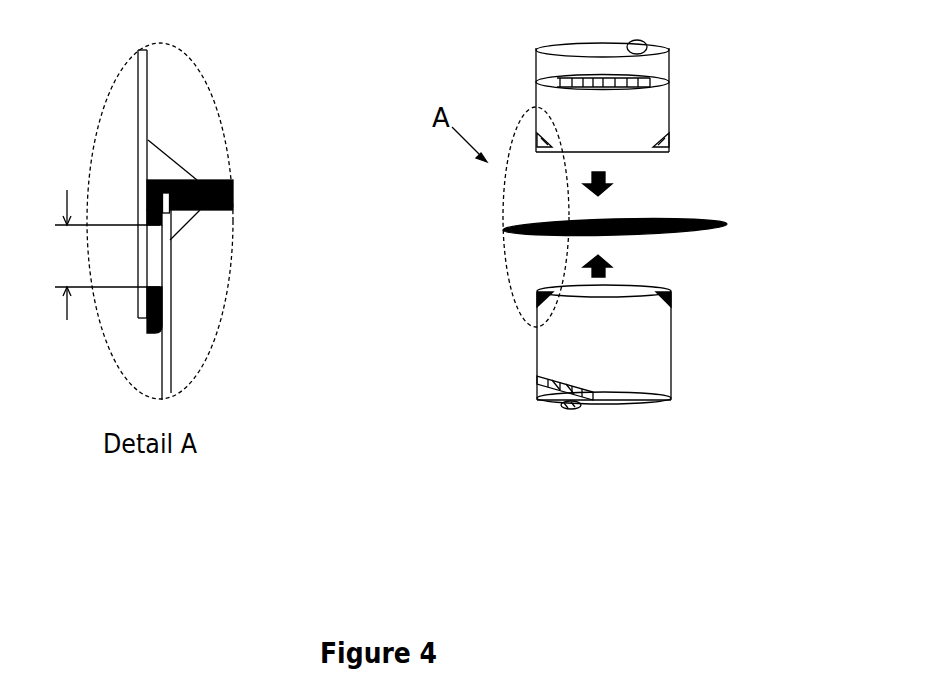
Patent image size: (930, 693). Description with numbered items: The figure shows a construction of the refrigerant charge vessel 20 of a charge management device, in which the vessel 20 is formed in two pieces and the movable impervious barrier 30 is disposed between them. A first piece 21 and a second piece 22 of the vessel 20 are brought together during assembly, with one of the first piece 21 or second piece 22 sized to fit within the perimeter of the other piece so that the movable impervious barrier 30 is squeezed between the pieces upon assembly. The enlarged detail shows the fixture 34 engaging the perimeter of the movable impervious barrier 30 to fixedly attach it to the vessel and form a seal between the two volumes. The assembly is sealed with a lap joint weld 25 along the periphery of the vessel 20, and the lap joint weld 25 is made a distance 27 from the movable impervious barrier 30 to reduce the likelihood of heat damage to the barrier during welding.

The refrigerant charge vessel 20 is at (671, 340).
The first piece 21 is at (170, 267).
The second piece 22 is at (138, 70).
The lap joint weld 25 is at (155, 328).
The distance 27 is at (105, 255).
The movable impervious barrier 30 is at (217, 180).
The fixture 34 is at (160, 150).